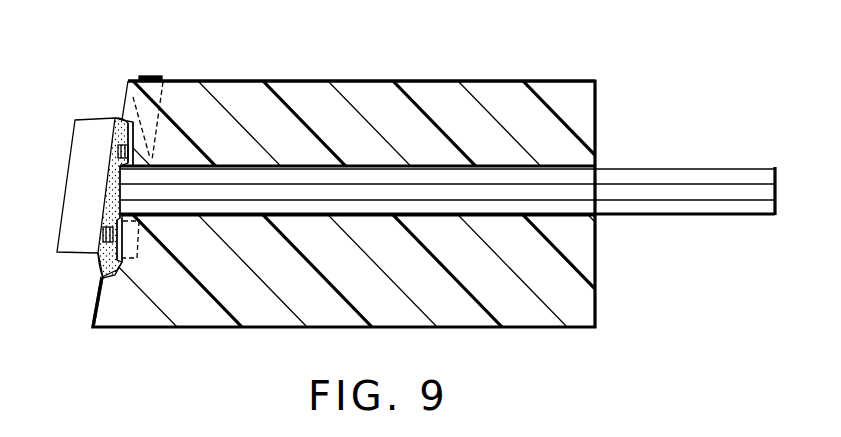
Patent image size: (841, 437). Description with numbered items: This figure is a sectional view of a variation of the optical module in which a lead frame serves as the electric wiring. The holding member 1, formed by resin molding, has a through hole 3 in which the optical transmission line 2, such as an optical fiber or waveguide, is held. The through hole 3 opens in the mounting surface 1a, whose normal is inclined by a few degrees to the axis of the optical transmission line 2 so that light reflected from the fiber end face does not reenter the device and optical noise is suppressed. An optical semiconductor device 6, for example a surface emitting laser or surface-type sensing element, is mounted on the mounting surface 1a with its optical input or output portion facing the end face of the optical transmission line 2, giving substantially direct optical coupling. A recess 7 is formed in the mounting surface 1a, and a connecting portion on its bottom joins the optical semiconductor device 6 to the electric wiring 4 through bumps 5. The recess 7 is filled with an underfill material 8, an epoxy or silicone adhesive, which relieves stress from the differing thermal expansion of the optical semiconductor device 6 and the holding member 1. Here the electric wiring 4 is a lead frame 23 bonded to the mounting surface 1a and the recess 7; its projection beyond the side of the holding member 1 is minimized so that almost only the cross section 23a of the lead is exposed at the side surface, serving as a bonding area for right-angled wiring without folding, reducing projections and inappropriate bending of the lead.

The holding member 1 is at (368, 81).
The mounting surface 1a is at (93, 321).
The optical transmission line 2 is at (684, 167).
The through hole 3 is at (572, 166).
The electric wiring 4 is at (277, 82).
The bumps 5 is at (100, 238).
The optical semiconductor device 6 is at (68, 160).
The recess 7 is at (112, 276).
The underfill material 8 is at (95, 265).
The lead frame 23 is at (127, 86).
The cross section of lead 23a is at (152, 75).